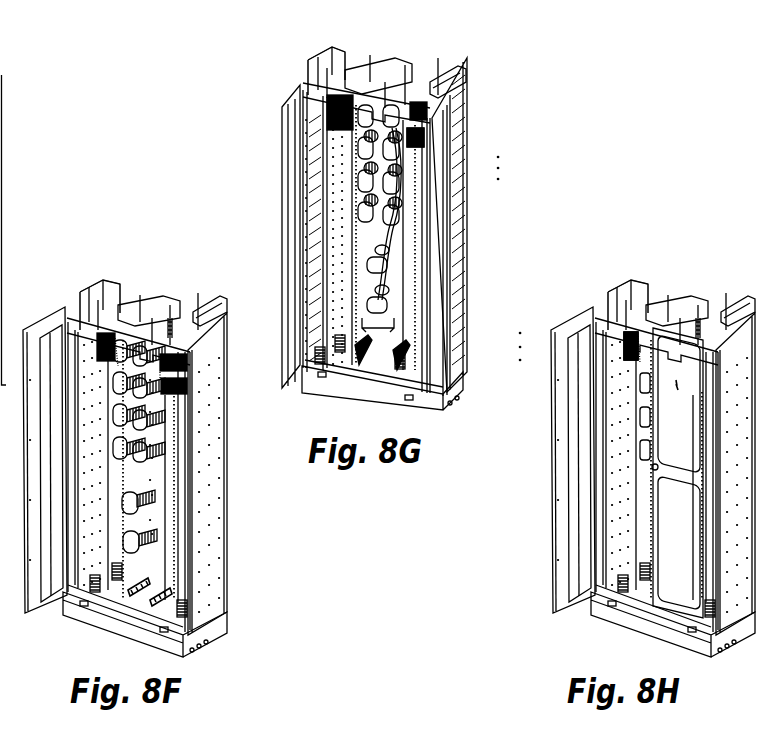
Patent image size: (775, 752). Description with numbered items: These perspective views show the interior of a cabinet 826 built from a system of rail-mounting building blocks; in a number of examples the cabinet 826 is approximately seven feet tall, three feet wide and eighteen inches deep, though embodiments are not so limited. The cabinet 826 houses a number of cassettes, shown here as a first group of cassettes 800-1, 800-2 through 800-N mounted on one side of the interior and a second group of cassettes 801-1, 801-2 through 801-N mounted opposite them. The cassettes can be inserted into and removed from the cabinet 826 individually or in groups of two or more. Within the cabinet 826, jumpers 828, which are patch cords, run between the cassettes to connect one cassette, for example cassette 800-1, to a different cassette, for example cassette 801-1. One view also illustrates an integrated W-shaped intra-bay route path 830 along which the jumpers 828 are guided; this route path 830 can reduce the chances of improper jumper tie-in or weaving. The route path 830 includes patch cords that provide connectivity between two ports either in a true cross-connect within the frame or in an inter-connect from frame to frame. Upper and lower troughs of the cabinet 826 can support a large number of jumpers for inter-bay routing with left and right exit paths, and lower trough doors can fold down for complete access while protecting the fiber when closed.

In FIG. 8F, the cabinet 826 is at (97, 290).
In FIG. 8G, the cabinet 826 is at (310, 75).
In FIG. 8H, the cabinet 826 is at (687, 313).
In FIG. 8G, the cassette 800-1 is at (326, 99).
In FIG. 8H, the cassette 800-1 is at (625, 333).
In FIG. 8H, the cassette 800-2 is at (630, 345).
In FIG. 8H, the cassette 800-N is at (628, 345).
In FIG. 8G, the cassette 801-1 is at (420, 108).
In FIG. 8G, the cassette 801-2 is at (425, 133).
In FIG. 8G, the cassette 801-N is at (425, 143).
In FIG. 8G, the jumper 828 is at (395, 244).
In FIG. 8G, the intra-bay route path 830 is at (380, 330).